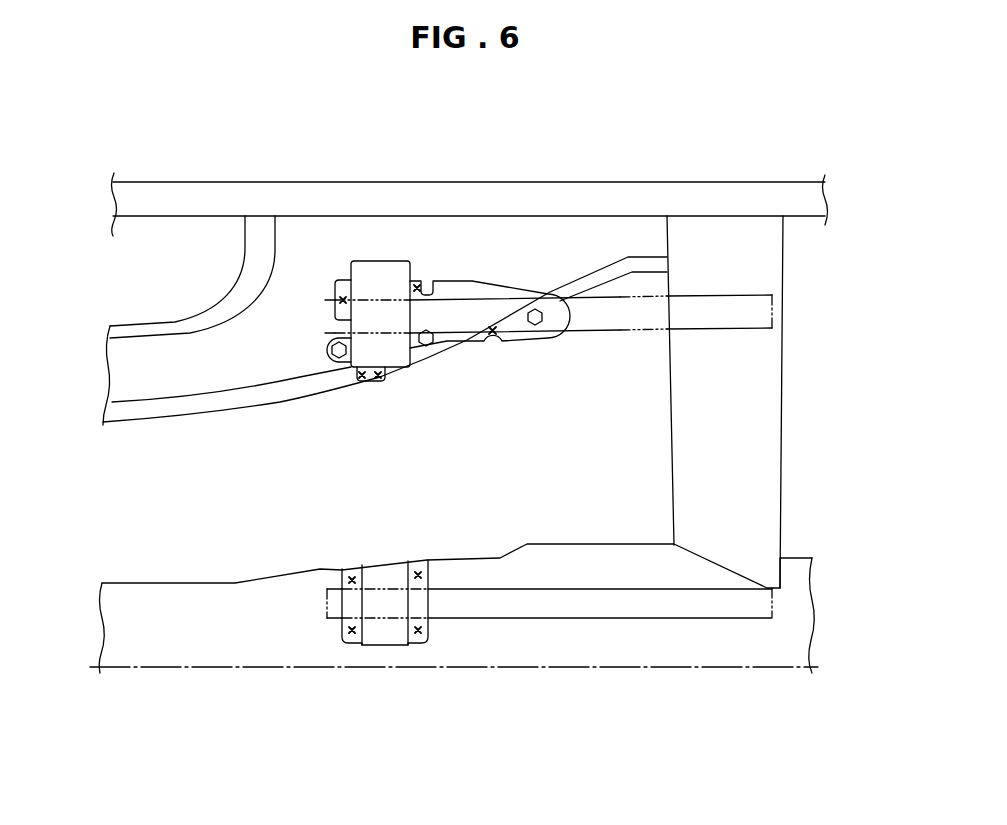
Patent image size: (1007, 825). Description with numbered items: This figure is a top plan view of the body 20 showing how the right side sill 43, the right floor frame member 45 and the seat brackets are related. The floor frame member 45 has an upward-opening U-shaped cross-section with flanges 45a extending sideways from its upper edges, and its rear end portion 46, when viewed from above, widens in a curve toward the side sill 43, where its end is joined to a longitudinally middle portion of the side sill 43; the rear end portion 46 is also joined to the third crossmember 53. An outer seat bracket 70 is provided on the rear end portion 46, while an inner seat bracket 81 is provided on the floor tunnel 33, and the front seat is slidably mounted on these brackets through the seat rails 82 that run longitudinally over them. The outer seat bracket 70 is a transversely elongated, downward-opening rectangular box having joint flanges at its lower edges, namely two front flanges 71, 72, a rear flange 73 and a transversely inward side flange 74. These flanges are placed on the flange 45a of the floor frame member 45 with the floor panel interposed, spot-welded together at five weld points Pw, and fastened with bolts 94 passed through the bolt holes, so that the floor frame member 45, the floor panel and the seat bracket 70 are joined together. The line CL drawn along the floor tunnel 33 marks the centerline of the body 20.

The body 20 is at (250, 153).
The side sill 43 is at (154, 185).
The floor frame member 45 is at (147, 378).
The flange 45a is at (186, 402).
The rear end portion 46 is at (607, 225).
The third crossmember 53 is at (786, 407).
The outer seat bracket 70 is at (382, 258).
The front flange 71 is at (326, 348).
The front flange 72 is at (325, 303).
The rear flange 73 is at (478, 276).
The transversely inward side flange 74 is at (383, 381).
The inner seat bracket 81 is at (385, 645).
The seat rail 82 is at (720, 292).
The bolt 94 is at (333, 362).
The floor tunnel 33 is at (182, 598).
The weld point Pw is at (343, 298).
The center line CL is at (158, 667).